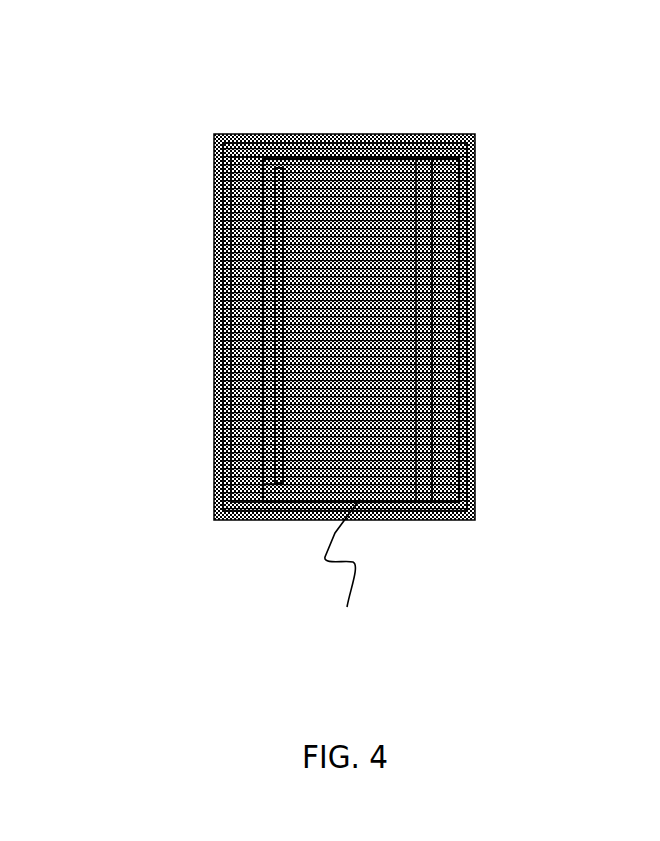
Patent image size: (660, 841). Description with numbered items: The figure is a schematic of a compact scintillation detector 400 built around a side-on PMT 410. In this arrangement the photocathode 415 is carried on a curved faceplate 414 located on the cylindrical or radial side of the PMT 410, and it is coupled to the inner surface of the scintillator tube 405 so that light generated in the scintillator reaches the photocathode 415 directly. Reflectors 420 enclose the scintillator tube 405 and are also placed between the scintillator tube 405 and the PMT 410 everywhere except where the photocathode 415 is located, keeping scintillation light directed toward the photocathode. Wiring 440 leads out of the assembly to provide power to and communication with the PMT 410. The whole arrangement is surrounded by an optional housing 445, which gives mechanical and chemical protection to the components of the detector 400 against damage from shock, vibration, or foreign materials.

The compact scintillation detector 400 is at (337, 316).
The scintillator tube 405 is at (443, 422).
The PMT 410 is at (340, 188).
The curved faceplate 414 is at (270, 297).
The photocathode 415 is at (277, 368).
The reflectors 420 is at (475, 327).
The wiring 440 is at (335, 533).
The housing 445 is at (213, 450).